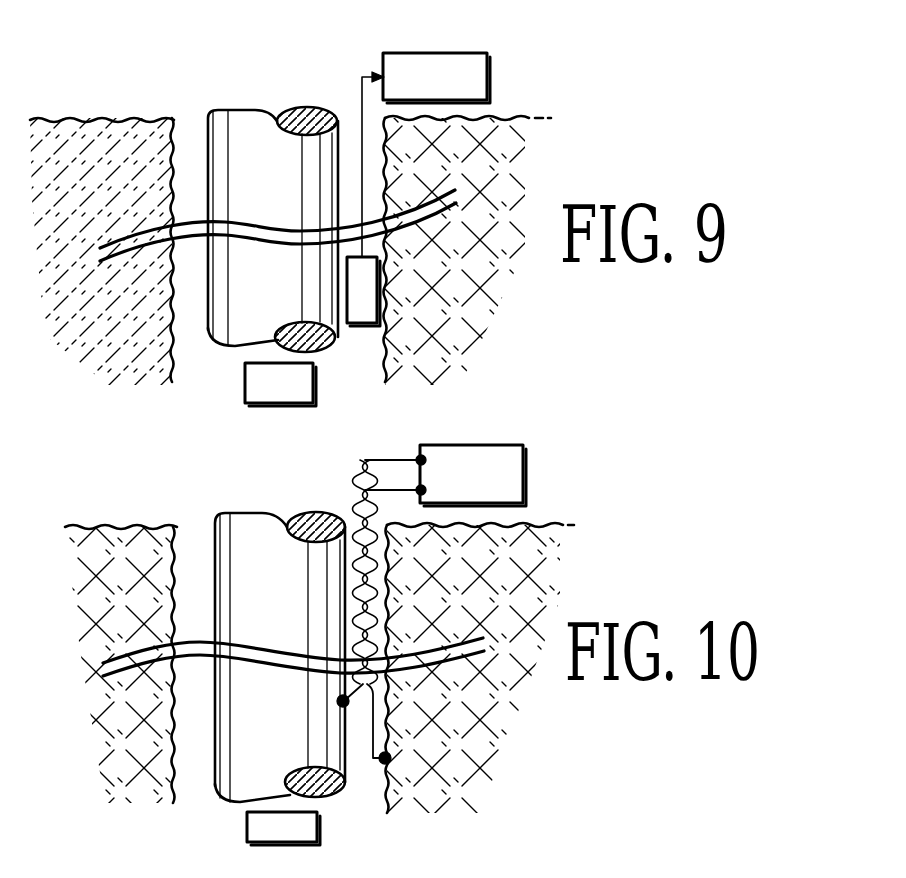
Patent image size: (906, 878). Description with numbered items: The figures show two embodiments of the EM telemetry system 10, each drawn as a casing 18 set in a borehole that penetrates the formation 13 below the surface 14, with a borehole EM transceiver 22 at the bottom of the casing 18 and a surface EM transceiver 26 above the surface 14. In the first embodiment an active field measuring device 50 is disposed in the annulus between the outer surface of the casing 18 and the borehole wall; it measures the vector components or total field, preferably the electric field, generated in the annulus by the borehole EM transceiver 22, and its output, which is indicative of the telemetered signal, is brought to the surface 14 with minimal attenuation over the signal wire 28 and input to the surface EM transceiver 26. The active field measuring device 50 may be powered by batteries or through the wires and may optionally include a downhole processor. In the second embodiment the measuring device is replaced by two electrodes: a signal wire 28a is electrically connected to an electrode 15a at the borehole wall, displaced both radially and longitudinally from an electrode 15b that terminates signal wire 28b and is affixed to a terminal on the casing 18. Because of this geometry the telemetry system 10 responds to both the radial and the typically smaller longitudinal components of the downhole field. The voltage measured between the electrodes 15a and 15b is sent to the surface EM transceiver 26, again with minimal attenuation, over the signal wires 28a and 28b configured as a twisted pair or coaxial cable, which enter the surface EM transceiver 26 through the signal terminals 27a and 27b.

In FIG. 9, the EM telemetry system 10 is at (472, 29).
In FIG. 10, the EM telemetry system 10 is at (515, 421).
In FIG. 9, the formation 13 is at (138, 311).
In FIG. 10, the formation 13 is at (146, 598).
In FIG. 9, the surface 14 is at (158, 118).
In FIG. 10, the surface 14 is at (150, 527).
In FIG. 9, the casing 18 is at (250, 186).
In FIG. 10, the casing 18 is at (250, 768).
In FIG. 9, the borehole EM transceiver 22 is at (245, 376).
In FIG. 10, the borehole EM transceiver 22 is at (247, 826).
In FIG. 9, the surface EM transceiver 26 is at (476, 78).
In FIG. 10, the surface EM transceiver 26 is at (520, 467).
In FIG. 9, the signal wire 28 is at (363, 186).
In FIG. 10, the signal wire 28 is at (365, 572).
In FIG. 9, the active field measuring device 50 is at (379, 279).
In FIG. 10, the signal terminal 27a is at (417, 458).
In FIG. 10, the signal terminal 27b is at (418, 488).
In FIG. 10, the signal wire 28a is at (375, 702).
In FIG. 10, the signal wire 28b is at (338, 702).
In FIG. 10, the electrode 15a is at (392, 758).
In FIG. 10, the electrode 15b is at (338, 706).